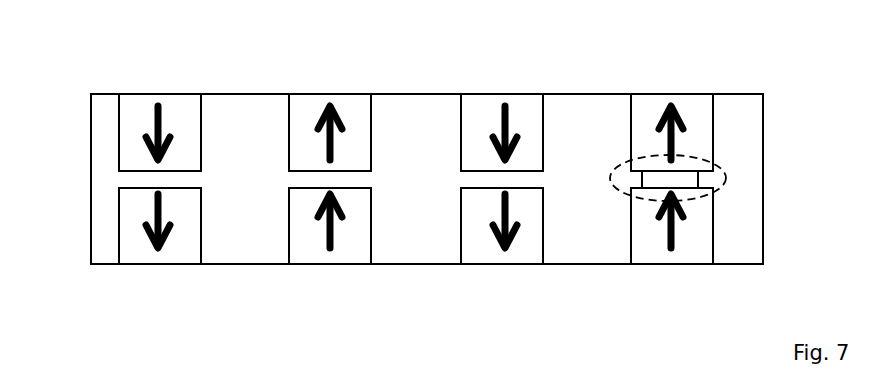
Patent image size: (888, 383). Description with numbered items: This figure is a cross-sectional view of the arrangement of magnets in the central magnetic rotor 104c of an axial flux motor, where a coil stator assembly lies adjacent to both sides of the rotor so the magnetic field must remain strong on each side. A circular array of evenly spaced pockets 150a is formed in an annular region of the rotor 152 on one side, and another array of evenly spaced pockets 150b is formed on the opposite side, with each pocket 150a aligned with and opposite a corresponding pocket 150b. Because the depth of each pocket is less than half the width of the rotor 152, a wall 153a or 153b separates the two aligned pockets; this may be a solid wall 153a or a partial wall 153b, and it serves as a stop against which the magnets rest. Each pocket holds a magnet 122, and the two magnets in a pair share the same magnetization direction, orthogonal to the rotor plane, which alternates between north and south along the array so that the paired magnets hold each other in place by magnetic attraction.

The central magnetic rotor 104c is at (102, 93).
The thermoelectric modules 122 is at (154, 123).
The pockets 150a is at (158, 91).
The pockets 150b is at (158, 271).
The rotor 152 is at (255, 253).
The solid wall 153a is at (132, 177).
The partial wall 153b is at (704, 177).